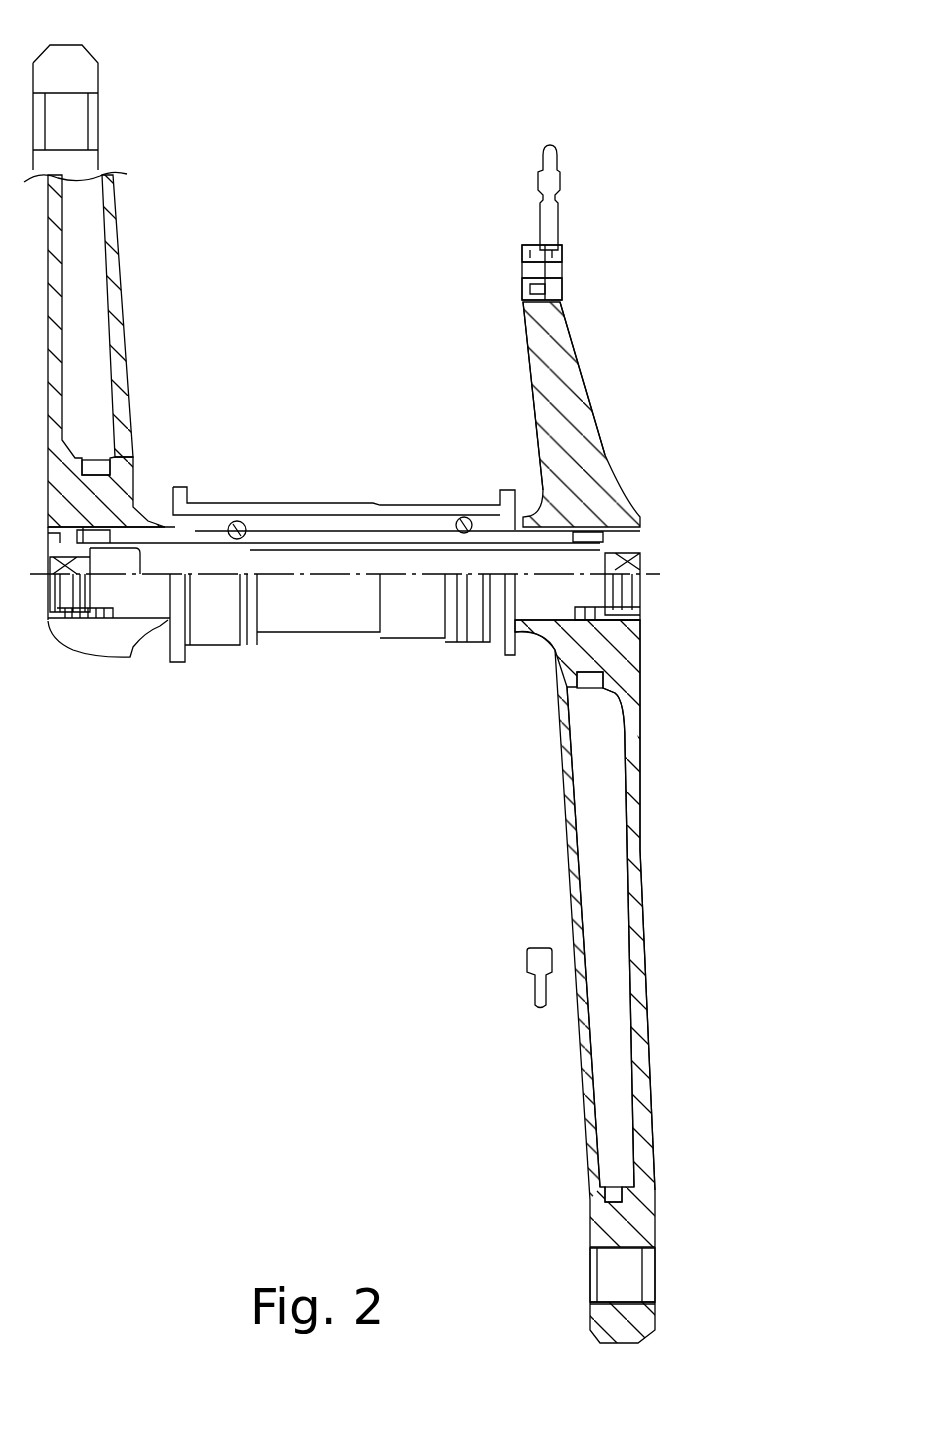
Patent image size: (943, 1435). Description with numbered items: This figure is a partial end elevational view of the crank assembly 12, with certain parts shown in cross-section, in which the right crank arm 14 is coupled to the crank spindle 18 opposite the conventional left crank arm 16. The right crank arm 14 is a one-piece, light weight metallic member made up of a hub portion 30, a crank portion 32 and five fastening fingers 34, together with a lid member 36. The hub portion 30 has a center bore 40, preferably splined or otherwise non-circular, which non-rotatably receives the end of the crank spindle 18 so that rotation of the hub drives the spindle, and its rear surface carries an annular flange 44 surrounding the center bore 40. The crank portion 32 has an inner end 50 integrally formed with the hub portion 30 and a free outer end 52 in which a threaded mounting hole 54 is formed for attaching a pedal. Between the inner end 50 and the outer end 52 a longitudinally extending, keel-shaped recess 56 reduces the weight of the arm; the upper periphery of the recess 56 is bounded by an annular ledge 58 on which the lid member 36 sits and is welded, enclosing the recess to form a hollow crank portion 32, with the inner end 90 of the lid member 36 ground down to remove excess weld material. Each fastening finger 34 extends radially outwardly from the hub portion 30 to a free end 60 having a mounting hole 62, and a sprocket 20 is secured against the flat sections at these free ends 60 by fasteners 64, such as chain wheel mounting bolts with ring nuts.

The crank assembly 12 is at (630, 99).
The right crank arm 14 is at (697, 704).
The left crank arm 16 is at (137, 254).
The crank spindle 18 is at (353, 485).
The sprocket 20 is at (578, 228).
The hub portion 30 is at (621, 449).
The crank portion 32 is at (664, 946).
The fastening finger 34 is at (590, 337).
The lid member 36 is at (548, 864).
The center bore 40 is at (657, 575).
The annular flange 44 is at (540, 650).
The inner end 50 is at (640, 750).
The free outer end 52 is at (655, 1215).
The mounting hole 54 is at (630, 1280).
The recess 56 is at (615, 1035).
The annular ledge 58 is at (580, 665).
The free end 60 is at (572, 297).
The mounting hole 62 is at (522, 290).
The fastener 64 is at (520, 278).
The inner end 90 is at (555, 713).